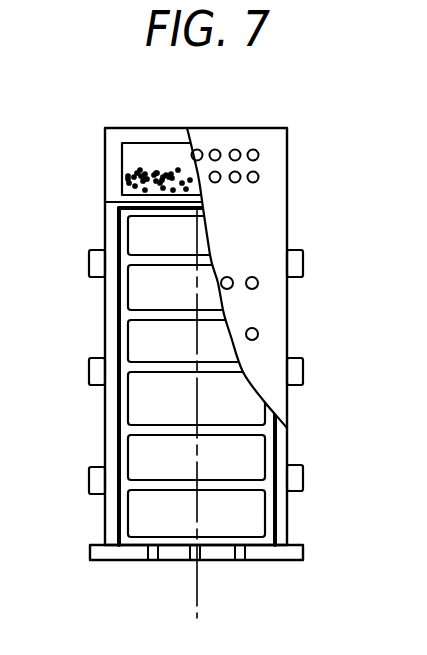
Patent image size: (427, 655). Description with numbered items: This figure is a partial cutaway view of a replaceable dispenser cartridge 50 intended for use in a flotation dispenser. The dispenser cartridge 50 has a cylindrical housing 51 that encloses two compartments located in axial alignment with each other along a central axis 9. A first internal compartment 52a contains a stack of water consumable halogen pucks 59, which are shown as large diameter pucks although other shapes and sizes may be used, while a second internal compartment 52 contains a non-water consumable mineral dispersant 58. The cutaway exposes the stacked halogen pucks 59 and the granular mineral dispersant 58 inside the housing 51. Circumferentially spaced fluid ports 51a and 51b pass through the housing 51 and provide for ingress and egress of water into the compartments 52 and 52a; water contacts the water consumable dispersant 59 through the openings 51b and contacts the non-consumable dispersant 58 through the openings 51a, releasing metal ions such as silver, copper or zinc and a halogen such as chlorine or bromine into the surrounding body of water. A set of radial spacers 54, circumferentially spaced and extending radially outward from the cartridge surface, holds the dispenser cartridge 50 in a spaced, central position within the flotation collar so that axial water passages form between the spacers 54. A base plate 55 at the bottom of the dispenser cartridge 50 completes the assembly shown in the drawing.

The dispenser cartridge 50 is at (303, 96).
The cylindrical housing 51 is at (283, 172).
The fluid ports 51a is at (253, 149).
The fluid ports 51b is at (258, 283).
The second internal compartment 52 is at (205, 334).
The first internal compartment 52a is at (127, 318).
The radial spacers 54 is at (90, 257).
The base plate 55 is at (285, 560).
The non-water consumable mineral dispersant 58 is at (162, 173).
The water consumable halogen pucks 59 is at (237, 398).
The central axis 9 is at (226, 608).